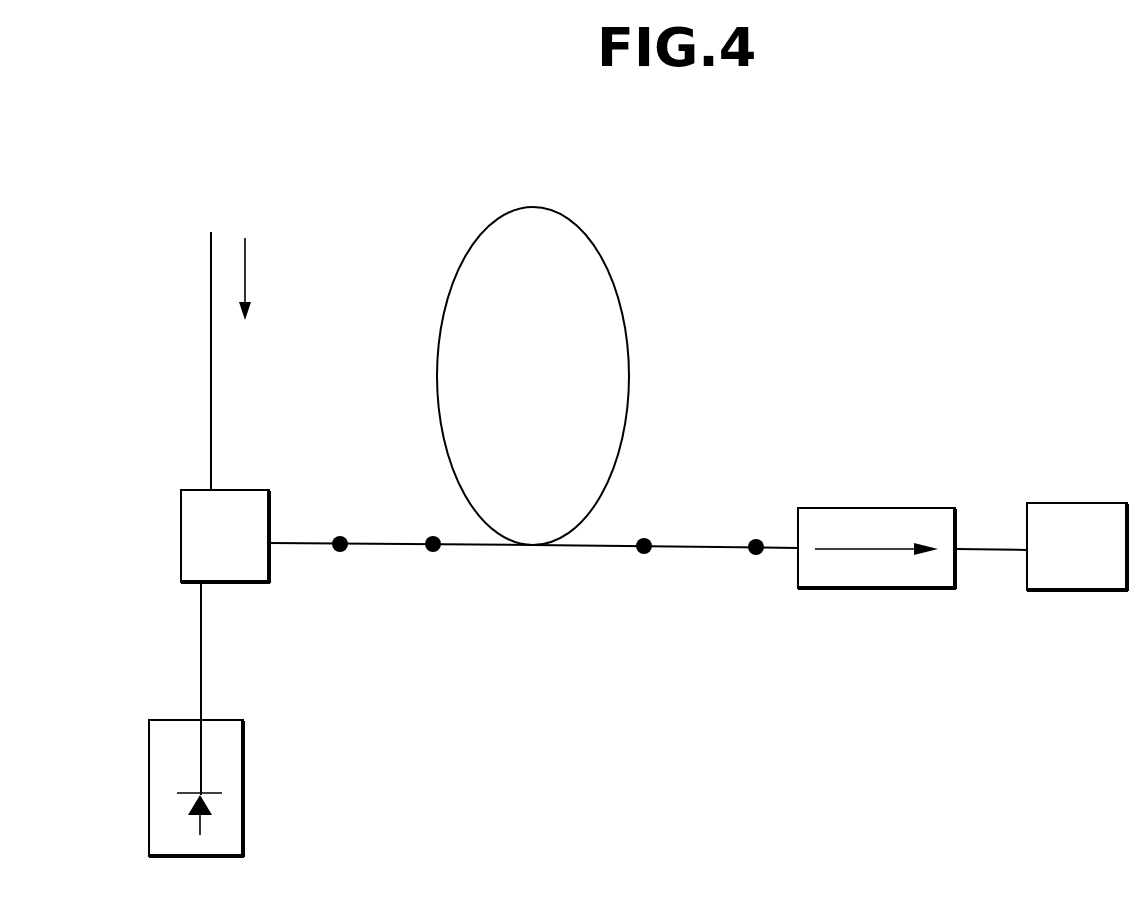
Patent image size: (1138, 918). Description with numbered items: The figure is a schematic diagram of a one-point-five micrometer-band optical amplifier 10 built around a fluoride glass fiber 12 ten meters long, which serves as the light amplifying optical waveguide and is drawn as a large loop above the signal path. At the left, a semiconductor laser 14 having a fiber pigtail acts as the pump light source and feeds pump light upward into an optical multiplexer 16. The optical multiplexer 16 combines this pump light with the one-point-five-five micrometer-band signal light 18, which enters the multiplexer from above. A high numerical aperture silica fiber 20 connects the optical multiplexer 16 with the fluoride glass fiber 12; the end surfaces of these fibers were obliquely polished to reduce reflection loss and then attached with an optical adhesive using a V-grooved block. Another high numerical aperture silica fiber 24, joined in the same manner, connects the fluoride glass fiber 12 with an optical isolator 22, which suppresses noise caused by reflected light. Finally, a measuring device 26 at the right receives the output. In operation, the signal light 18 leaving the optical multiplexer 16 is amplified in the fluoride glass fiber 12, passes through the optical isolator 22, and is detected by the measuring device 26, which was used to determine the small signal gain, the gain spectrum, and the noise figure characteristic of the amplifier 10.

The optical amplifier 10 is at (876, 247).
The fluoride glass fiber 12 is at (597, 258).
The semiconductor laser 14 is at (244, 795).
The optical multiplexer 16 is at (247, 490).
The signal light 18 is at (212, 206).
The high N.A. silica fiber 20 is at (389, 545).
The optical isolator 22 is at (878, 508).
The high N.A. silica fiber 24 is at (703, 548).
The measuring device 26 is at (1084, 503).